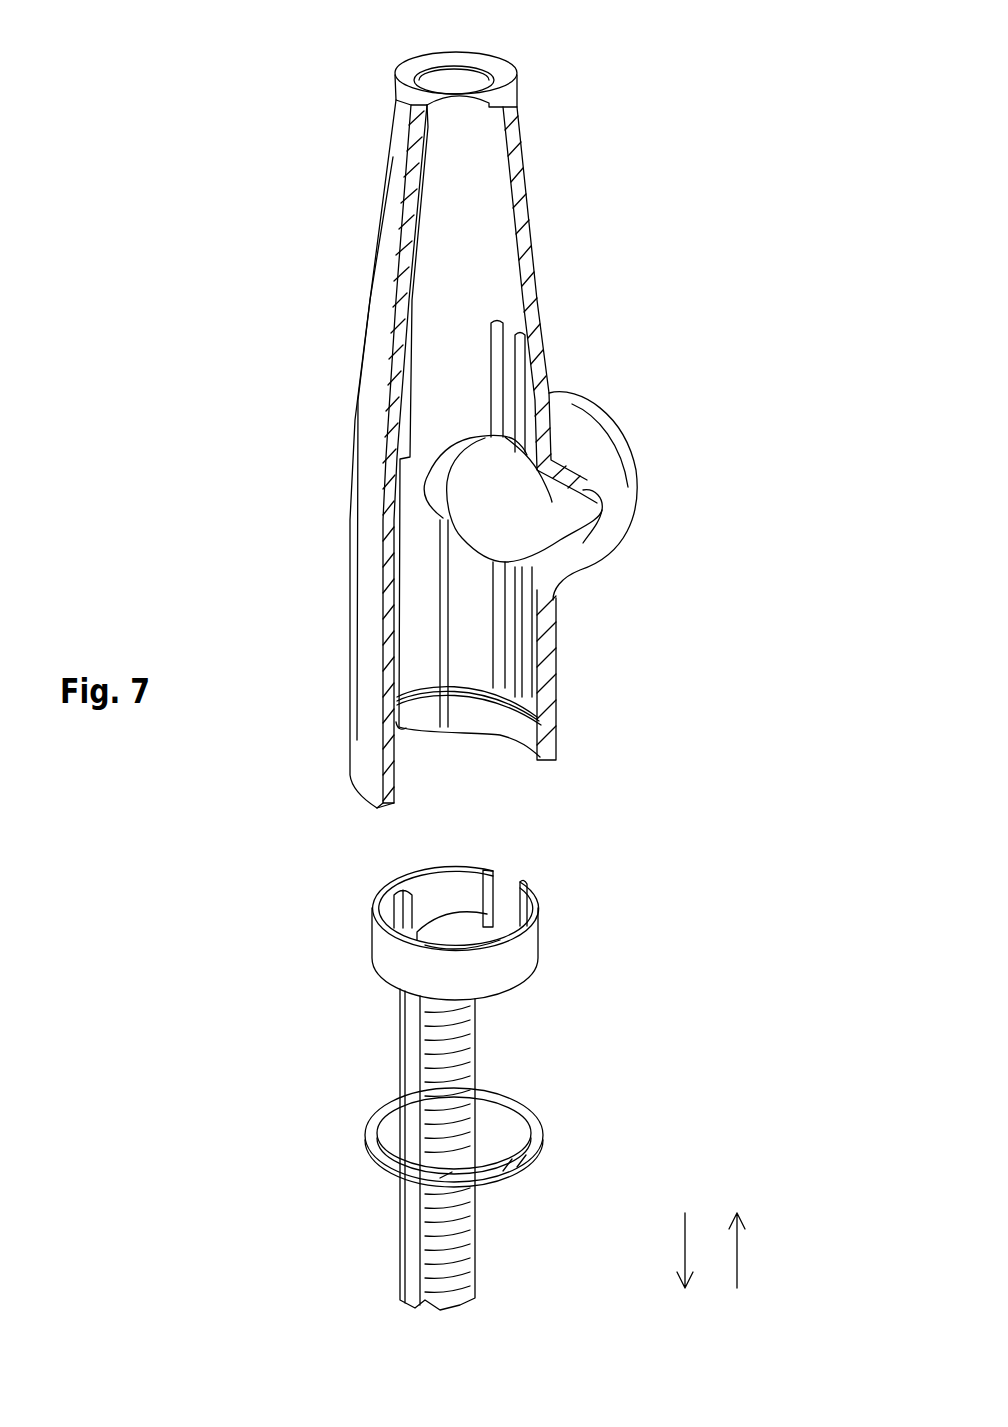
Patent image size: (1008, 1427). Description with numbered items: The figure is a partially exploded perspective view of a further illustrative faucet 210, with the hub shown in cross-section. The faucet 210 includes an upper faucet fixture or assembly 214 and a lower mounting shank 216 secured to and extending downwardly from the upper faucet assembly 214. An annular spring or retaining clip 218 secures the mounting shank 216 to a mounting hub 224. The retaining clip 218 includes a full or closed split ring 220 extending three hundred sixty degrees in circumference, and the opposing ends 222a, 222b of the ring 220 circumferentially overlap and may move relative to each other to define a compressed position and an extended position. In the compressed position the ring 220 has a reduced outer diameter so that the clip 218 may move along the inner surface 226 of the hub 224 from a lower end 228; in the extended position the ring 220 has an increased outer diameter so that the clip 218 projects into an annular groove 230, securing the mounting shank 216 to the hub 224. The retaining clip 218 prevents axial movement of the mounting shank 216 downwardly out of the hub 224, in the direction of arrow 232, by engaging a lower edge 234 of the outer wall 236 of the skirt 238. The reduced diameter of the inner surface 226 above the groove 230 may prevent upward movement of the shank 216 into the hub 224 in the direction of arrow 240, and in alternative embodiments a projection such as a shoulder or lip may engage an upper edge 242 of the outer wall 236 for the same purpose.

The faucet 210 is at (742, 108).
The upper faucet fixture or assembly 214 is at (593, 321).
The mounting shank 216 is at (675, 946).
The retaining clip 218 is at (550, 1121).
The split ring 220 is at (372, 1130).
The opposing end of the ring 222a is at (476, 1172).
The opposing end of the ring 222b is at (438, 1180).
The mounting hub 224 is at (368, 550).
The inner surface of the hub 226 is at (490, 706).
The lower end of the hub 228 is at (376, 807).
The annular groove 230 is at (543, 720).
The arrow 232 is at (685, 1250).
The lower edge of the outer wall 234 is at (507, 990).
The outer wall 236 is at (373, 950).
The skirt 238 is at (528, 948).
The arrow 240 is at (737, 1250).
The upper edge of the outer wall 242 is at (468, 868).